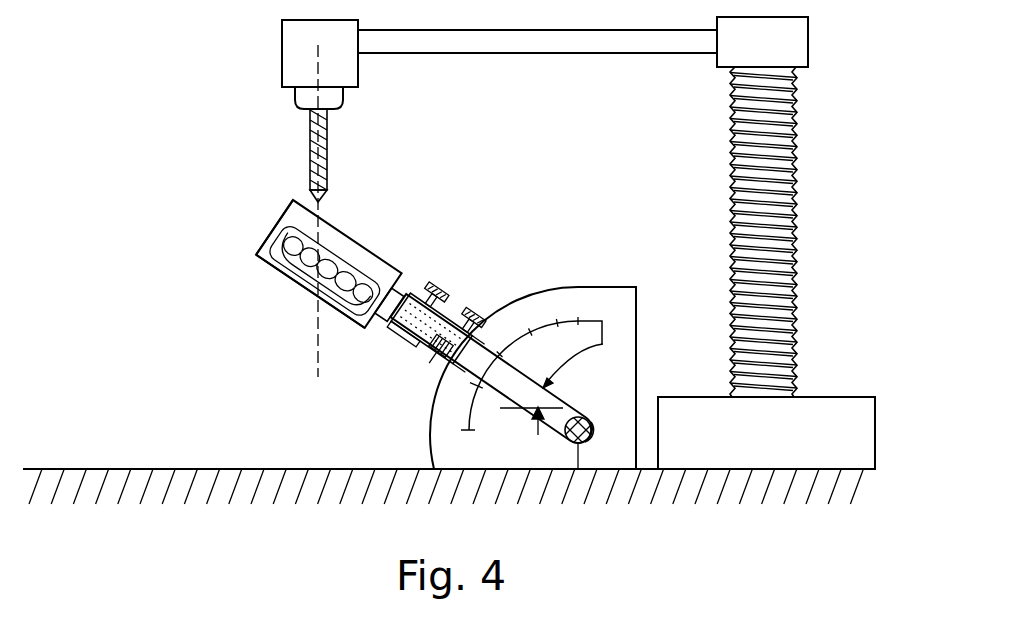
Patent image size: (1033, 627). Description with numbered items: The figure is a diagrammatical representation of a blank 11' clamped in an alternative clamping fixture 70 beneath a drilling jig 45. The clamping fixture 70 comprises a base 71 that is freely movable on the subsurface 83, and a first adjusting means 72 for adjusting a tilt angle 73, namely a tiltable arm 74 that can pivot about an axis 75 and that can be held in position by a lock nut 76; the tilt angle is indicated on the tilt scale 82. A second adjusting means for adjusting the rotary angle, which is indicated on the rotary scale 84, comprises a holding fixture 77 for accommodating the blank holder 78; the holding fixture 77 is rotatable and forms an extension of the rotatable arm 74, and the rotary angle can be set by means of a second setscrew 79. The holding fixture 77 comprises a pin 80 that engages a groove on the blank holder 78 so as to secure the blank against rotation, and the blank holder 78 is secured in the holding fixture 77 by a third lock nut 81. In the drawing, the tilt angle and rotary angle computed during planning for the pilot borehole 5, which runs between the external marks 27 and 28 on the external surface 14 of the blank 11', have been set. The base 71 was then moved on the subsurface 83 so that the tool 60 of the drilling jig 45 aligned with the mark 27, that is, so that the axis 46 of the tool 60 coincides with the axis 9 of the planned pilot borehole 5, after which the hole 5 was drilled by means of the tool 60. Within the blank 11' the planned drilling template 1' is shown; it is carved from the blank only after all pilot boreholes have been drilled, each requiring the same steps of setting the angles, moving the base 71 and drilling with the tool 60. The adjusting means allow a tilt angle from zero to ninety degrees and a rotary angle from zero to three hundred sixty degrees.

The drilling template 1' is at (291, 254).
The pilot borehole 5 is at (330, 225).
The axis of the planned pilot borehole 9 is at (316, 360).
The blank 11' is at (342, 248).
The external surface 14 is at (363, 242).
The external mark 27 is at (313, 222).
The external mark 28 is at (316, 295).
The drilling jig 45 is at (605, 40).
The axis of the tool 46 is at (320, 63).
The tool 60 is at (311, 142).
The clamping fixture 70 is at (628, 288).
The base 71 is at (637, 328).
The first adjusting means 72 is at (594, 424).
The tilt angle 73 is at (602, 321).
The tiltable arm 74 is at (445, 388).
The axis 75 is at (462, 310).
The lock nut 76 is at (580, 447).
The holding fixture 77 is at (412, 342).
The blank holder 78 is at (460, 305).
The second setscrew 79 is at (485, 315).
The pin 80 is at (405, 277).
The third lock nut 81 is at (450, 295).
The tilt scale 82 is at (582, 320).
The subsurface 83 is at (162, 471).
The rotary scale 84 is at (440, 358).